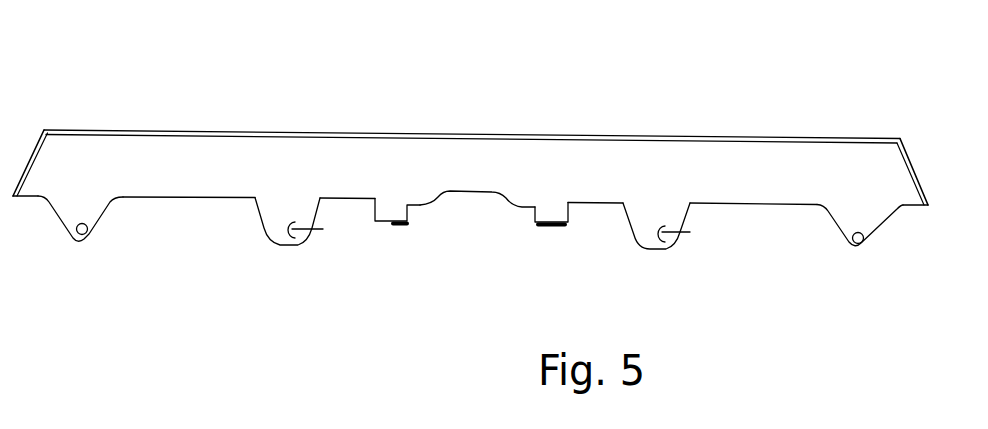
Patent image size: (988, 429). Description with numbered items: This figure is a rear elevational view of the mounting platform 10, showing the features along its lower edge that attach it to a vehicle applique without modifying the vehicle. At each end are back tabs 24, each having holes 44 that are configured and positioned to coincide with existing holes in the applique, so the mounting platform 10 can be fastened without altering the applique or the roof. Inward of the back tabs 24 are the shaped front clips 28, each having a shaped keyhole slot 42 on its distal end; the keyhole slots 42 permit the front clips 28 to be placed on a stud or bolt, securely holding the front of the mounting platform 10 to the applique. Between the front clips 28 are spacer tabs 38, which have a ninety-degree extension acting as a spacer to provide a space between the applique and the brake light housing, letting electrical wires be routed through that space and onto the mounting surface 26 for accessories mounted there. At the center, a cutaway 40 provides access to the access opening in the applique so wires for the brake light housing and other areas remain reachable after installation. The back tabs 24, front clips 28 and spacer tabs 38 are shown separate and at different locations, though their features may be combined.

The mounting platform 10 is at (545, 128).
The mounting surface 26 is at (255, 128).
The back tabs 24 is at (92, 237).
The holes 44 is at (77, 240).
The shaped front clips 28 is at (300, 243).
The keyhole slots 42 is at (323, 229).
The spacer tabs 38 is at (395, 225).
The cutaway 40 is at (452, 197).